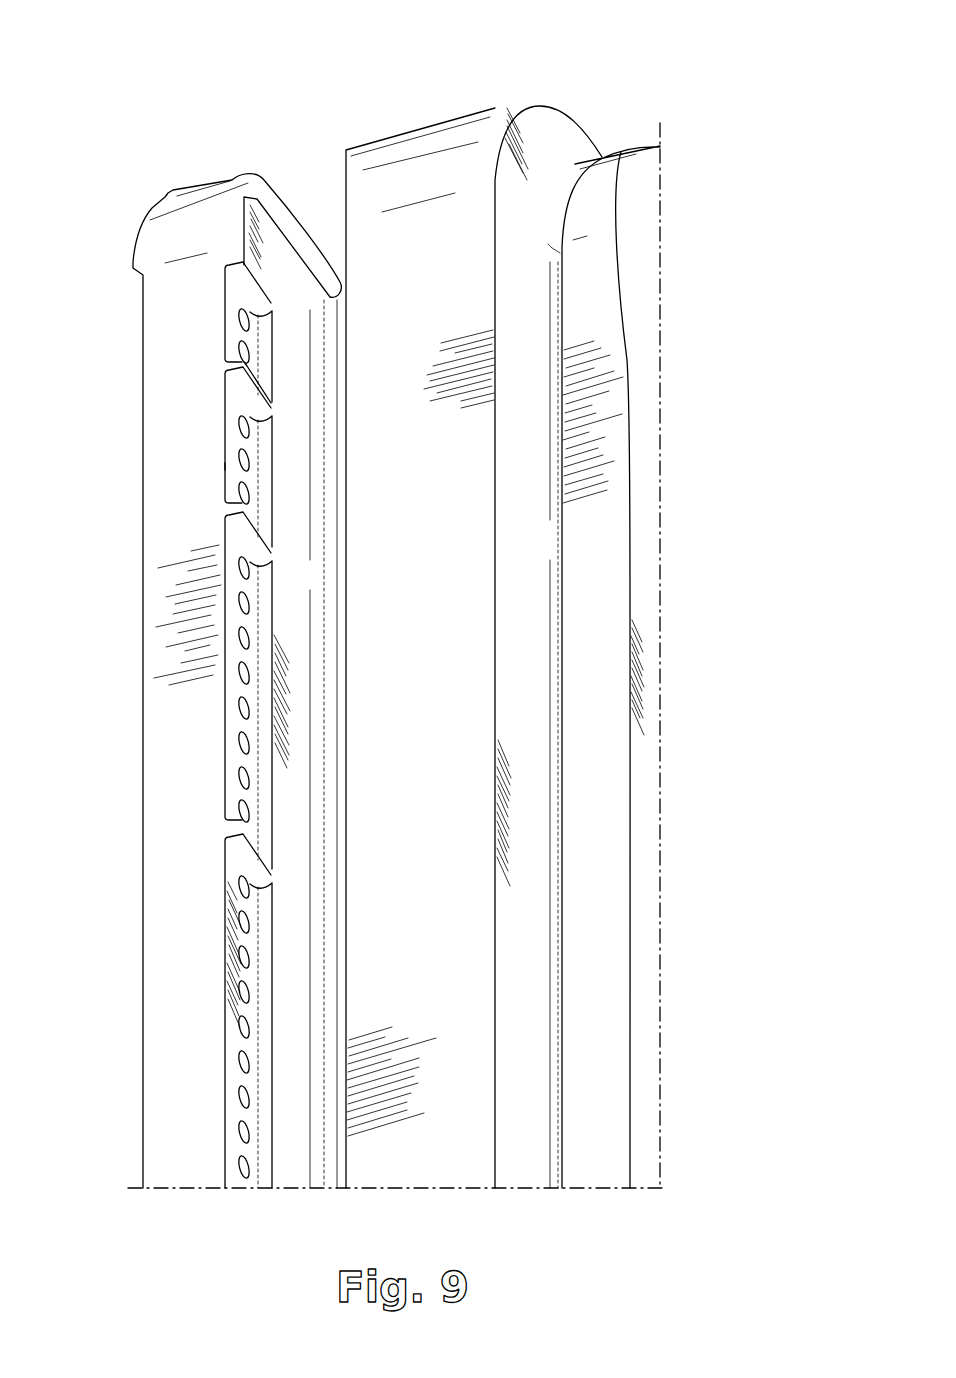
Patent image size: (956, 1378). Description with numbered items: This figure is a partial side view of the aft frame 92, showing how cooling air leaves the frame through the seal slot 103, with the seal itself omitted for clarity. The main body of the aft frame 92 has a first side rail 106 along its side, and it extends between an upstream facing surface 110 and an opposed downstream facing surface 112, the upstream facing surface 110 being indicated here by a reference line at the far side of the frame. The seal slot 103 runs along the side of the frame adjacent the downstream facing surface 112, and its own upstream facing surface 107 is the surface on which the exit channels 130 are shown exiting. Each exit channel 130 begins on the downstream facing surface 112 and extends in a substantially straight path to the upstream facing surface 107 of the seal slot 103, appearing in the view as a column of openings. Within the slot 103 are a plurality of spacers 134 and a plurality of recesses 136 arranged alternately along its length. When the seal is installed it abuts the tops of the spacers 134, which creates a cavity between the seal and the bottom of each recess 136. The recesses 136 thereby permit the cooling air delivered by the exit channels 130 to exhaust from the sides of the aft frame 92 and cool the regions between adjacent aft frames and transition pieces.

The aft frame 92 is at (674, 92).
The seal slot 103 is at (322, 185).
The first side rail 106 is at (434, 773).
The upstream facing surface of the seal slot 107 is at (243, 725).
The upstream facing surface 110 is at (648, 497).
The downstream facing surface 112 is at (143, 1093).
The exit channels 130 is at (242, 740).
The spacers 134 is at (237, 365).
The recesses 136 is at (225, 463).